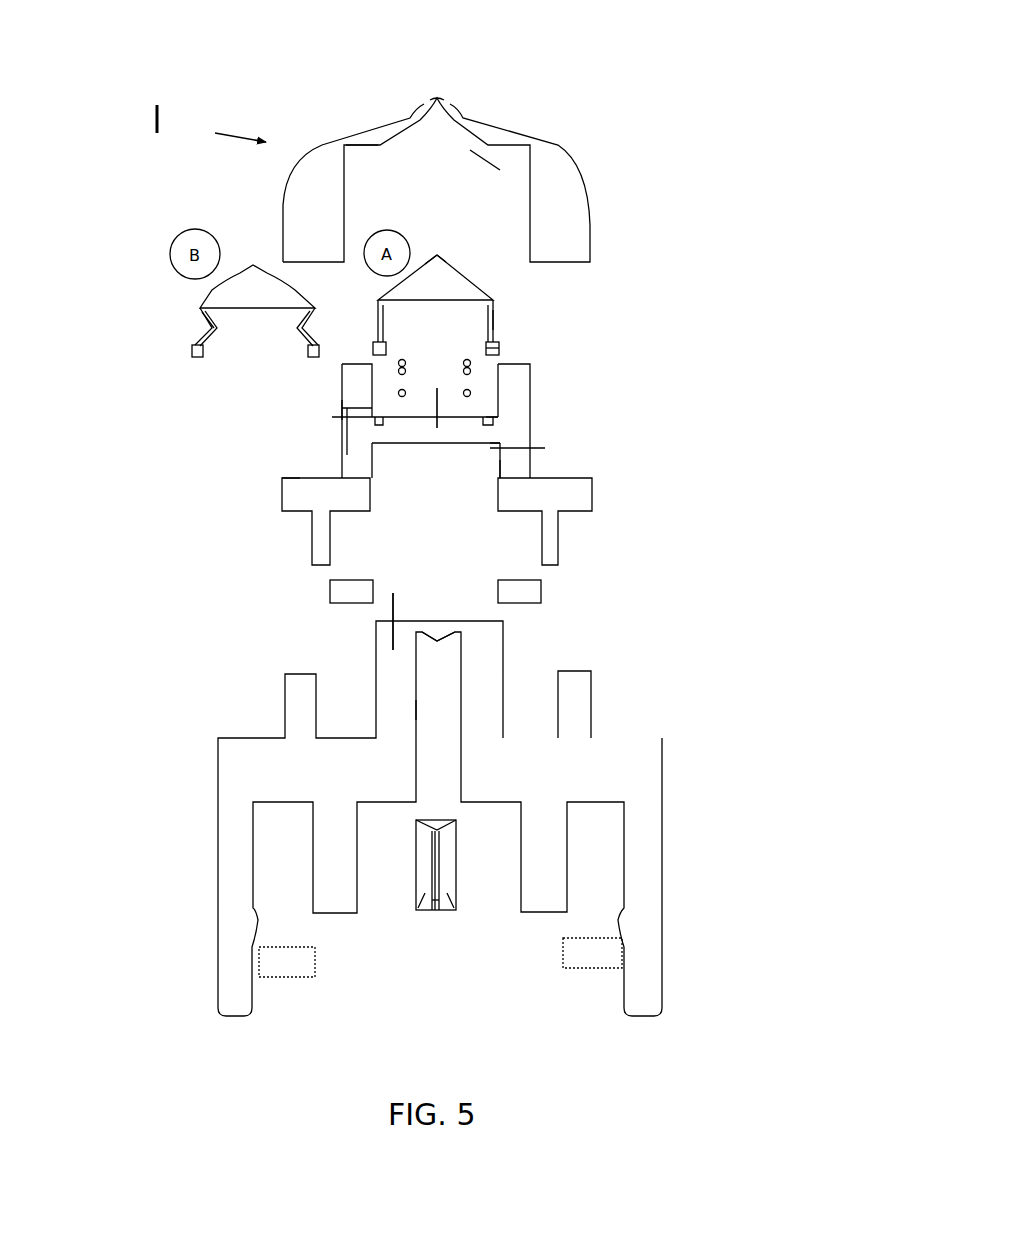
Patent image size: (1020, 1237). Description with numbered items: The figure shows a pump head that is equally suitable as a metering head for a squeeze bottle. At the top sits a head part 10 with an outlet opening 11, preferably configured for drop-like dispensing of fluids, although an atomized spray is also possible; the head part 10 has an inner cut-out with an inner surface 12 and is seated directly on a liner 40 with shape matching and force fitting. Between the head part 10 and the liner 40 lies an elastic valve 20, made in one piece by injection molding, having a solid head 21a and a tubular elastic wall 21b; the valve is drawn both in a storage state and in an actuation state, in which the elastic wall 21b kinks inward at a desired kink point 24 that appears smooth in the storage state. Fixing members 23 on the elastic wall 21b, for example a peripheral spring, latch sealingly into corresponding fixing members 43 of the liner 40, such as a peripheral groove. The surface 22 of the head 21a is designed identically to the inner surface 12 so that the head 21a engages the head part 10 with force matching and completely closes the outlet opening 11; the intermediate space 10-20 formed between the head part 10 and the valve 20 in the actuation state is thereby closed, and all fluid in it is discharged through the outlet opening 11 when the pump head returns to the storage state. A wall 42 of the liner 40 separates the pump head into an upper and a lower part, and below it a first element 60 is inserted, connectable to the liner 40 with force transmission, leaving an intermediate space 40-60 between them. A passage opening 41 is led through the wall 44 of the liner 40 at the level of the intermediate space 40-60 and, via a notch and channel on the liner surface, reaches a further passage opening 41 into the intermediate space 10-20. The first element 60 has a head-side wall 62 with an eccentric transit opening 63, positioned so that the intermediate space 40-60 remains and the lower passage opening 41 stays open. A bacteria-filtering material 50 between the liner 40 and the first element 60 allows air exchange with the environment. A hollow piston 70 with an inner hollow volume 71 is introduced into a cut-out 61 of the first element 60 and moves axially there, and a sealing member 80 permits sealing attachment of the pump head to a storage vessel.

The head part 10 is at (567, 162).
The outlet opening 11 is at (440, 94).
The inner surface 12 is at (395, 146).
The intermediate space 10-20 is at (488, 172).
The elastic valve 20 is at (500, 307).
The head 21a is at (458, 293).
The elastic wall 21b is at (490, 322).
The surface 22 is at (464, 263).
The fixing members 23 is at (488, 347).
The desired kink point 24 is at (220, 338).
The liner 40 is at (530, 428).
The passage opening 41 is at (328, 405).
The wall 42 is at (438, 390).
The fixing members 43 is at (490, 415).
The wall 44 is at (510, 468).
The intermediate space 40-60 is at (420, 483).
The material 50 is at (541, 588).
The first element 60 is at (591, 708).
The cut-out 61 is at (435, 707).
The wall 62 is at (391, 596).
The transit opening 63 is at (453, 616).
The hollow piston 70 is at (456, 849).
The inner hollow volume 71 is at (439, 920).
The sealing member 80 is at (622, 954).